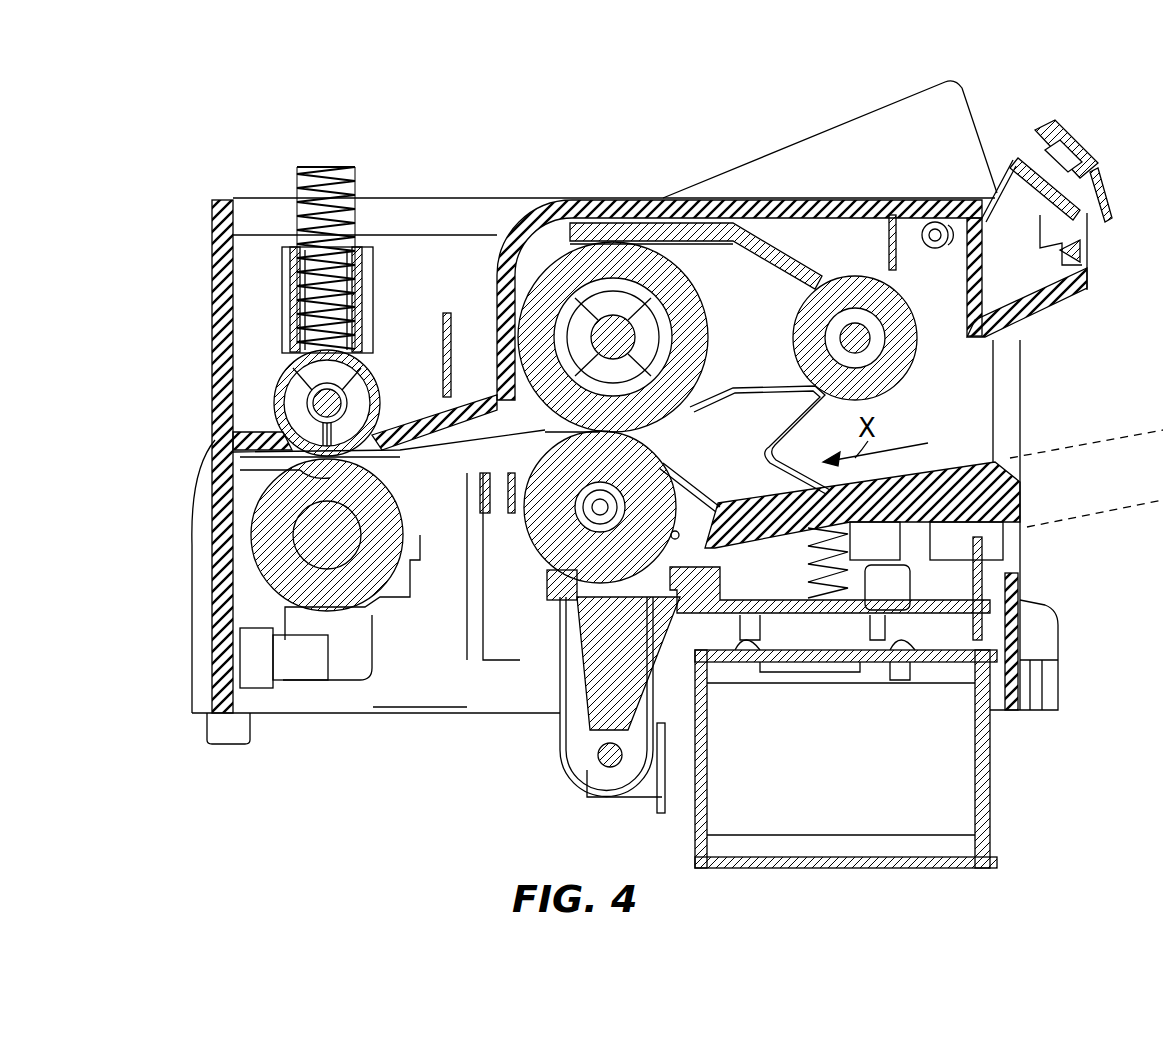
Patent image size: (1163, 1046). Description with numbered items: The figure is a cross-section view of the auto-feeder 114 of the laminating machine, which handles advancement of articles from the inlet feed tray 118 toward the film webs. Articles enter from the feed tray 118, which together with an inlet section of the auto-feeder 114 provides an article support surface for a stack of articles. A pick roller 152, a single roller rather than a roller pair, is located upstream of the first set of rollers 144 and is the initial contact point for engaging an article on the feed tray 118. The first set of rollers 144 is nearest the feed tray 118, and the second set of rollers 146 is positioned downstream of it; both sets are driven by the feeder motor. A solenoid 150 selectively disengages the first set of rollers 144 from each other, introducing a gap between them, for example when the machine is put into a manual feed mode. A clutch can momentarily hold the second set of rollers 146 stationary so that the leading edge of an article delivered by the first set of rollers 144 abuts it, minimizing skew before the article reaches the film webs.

The auto-feeder 114 is at (434, 150).
The inlet feed tray 118 is at (1083, 527).
The first set of rollers 144 is at (540, 350).
The second set of rollers 146 is at (300, 382).
The solenoid 150 is at (922, 782).
The pick roller 152 is at (893, 393).